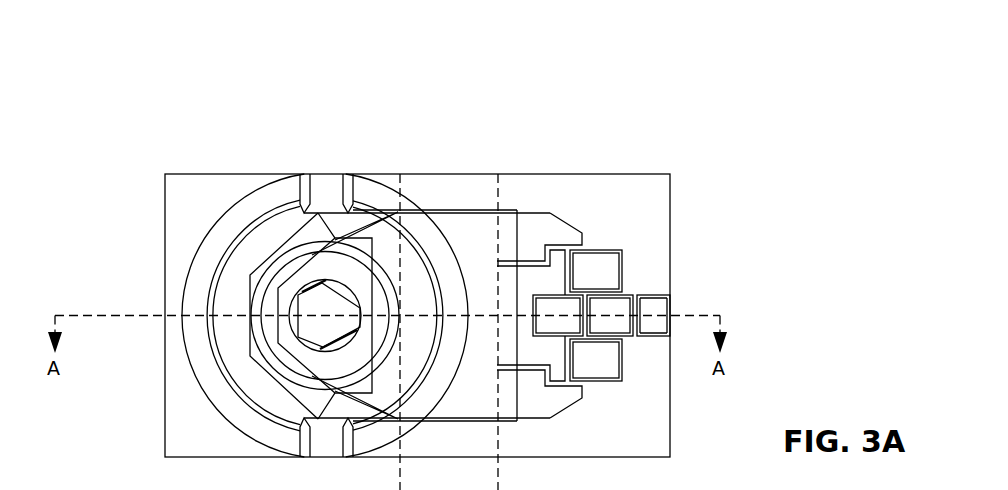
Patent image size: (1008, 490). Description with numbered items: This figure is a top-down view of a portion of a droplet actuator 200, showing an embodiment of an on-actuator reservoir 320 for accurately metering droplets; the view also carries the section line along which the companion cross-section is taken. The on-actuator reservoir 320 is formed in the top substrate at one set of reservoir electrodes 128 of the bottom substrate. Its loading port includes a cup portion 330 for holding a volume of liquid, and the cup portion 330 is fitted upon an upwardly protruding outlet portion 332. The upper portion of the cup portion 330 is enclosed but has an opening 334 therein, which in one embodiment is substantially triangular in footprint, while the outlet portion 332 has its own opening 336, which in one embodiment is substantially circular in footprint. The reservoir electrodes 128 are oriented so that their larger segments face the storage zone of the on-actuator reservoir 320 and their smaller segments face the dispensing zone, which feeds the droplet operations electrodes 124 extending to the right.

The droplet actuator 200 is at (172, 96).
The on-actuator reservoir 320 is at (498, 165).
The cup portion 330 is at (287, 282).
The outlet portion 332 is at (265, 263).
The opening 334 is at (343, 295).
The opening 336 is at (292, 333).
The reservoir electrodes 128 is at (566, 232).
The droplet operations electrodes 124 is at (668, 293).